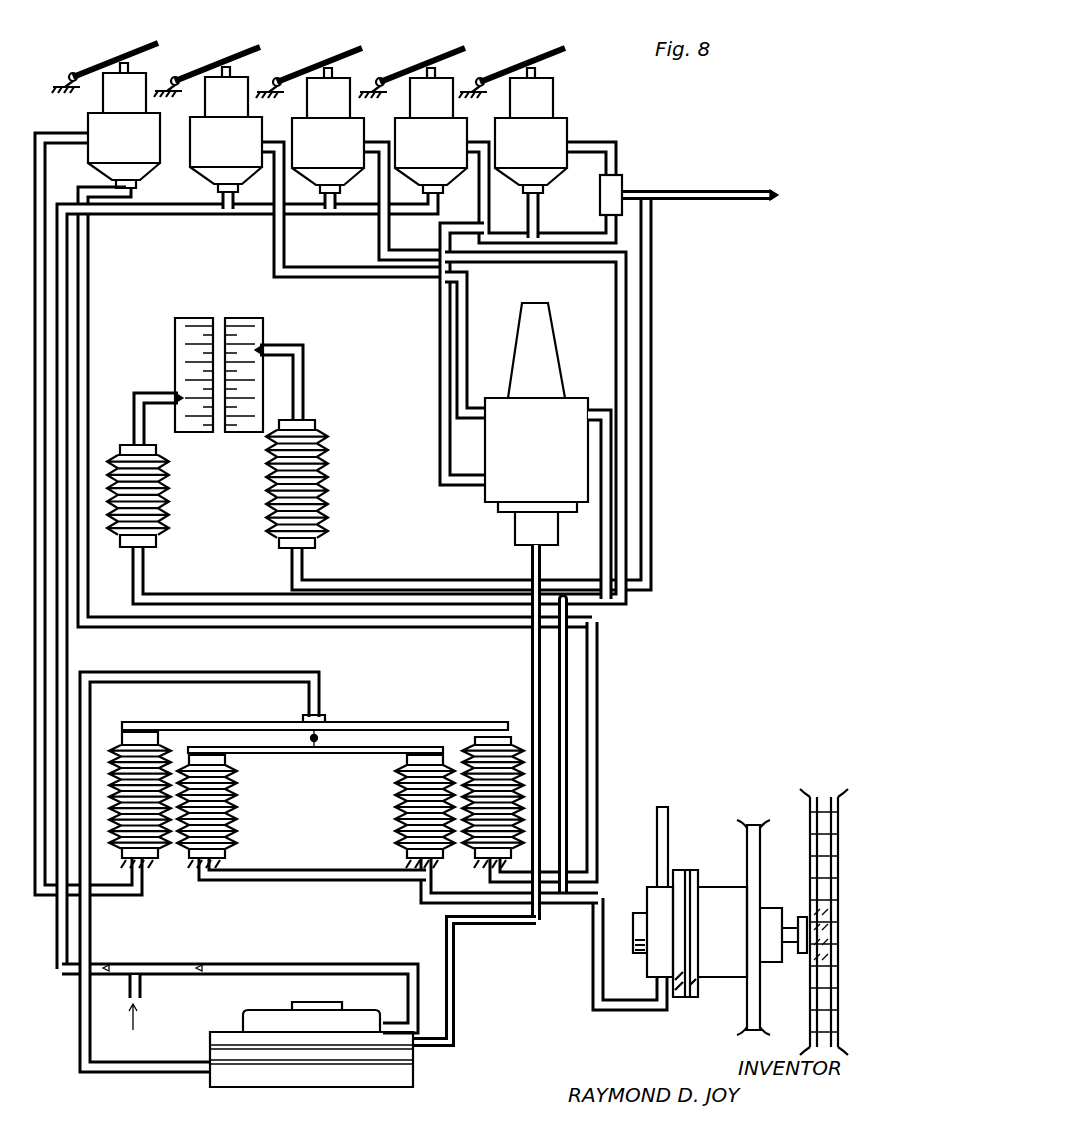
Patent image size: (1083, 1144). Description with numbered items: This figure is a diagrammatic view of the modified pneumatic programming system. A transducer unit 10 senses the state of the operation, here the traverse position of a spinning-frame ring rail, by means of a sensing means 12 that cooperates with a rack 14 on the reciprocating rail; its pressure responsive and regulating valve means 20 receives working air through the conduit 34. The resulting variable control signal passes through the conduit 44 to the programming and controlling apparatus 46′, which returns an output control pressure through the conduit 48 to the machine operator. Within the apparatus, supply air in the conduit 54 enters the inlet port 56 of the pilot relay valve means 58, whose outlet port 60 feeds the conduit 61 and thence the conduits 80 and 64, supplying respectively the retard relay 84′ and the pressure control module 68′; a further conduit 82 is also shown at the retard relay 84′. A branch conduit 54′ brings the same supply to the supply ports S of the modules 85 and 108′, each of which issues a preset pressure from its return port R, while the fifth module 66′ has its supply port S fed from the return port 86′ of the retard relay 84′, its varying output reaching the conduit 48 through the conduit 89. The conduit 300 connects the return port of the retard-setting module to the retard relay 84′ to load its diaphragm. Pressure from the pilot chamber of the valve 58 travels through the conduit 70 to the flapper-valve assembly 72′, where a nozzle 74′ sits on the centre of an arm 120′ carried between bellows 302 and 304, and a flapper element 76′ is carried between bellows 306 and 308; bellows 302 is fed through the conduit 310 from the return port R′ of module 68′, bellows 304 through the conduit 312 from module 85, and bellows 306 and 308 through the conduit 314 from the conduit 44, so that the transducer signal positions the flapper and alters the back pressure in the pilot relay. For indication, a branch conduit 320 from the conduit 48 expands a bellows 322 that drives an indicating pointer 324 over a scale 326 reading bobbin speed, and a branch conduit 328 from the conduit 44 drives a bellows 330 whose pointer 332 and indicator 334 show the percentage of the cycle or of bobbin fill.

The pressure control module 68′ is at (131, 148).
The pressure control module 85 is at (336, 153).
The pressure control module 108′ is at (445, 153).
The fifth pressure control module 66′ is at (540, 153).
The return port R is at (278, 138).
The return line R′ is at (84, 150).
The supply port S is at (138, 184).
The conduit 89 is at (606, 142).
The conduit 48 is at (735, 194).
The branch conduit 54′ is at (176, 218).
The conduit 54 is at (270, 967).
The conduit 310 is at (47, 337).
The indicator 334 is at (195, 318).
The scale 326 is at (250, 318).
The indicating pointer 324 is at (305, 347).
The indicator pointer 332 is at (145, 392).
The bellows 330 is at (170, 498).
The bellows 322 is at (330, 478).
The branch conduit 328 is at (200, 598).
The conduit 300 is at (470, 305).
The conduit 82 is at (440, 392).
The return port 86′ is at (482, 470).
The retard relay 84′ is at (475, 508).
The conduit 80 is at (541, 565).
The branch conduit 320 is at (652, 388).
The conduit 44 is at (630, 488).
The programming and controlling apparatus 46′ is at (673, 561).
The conduit 64 is at (440, 640).
The flapper-valve assembly 72′ is at (347, 706).
The arm 120′ is at (400, 718).
The bellows 304 is at (500, 735).
The bellows 302 is at (110, 735).
The nozzle 74′ is at (310, 745).
The flapper element 76′ is at (345, 758).
The bellows 306 is at (236, 820).
The bellows 308 is at (395, 830).
The conduit 314 is at (430, 905).
The inlet port 56 is at (380, 1020).
The conduit 61 is at (455, 975).
The outlet port 60 is at (418, 1055).
The conduit 70 is at (155, 1075).
The pilot relay valve means 58 is at (358, 1099).
The conduit 312 is at (598, 695).
The pressure responsive and regulating valve means 20 is at (645, 885).
The conduit 34 is at (668, 820).
The transducer unit 10 is at (715, 863).
The sensing means 12 is at (762, 862).
The rack 14 is at (815, 800).